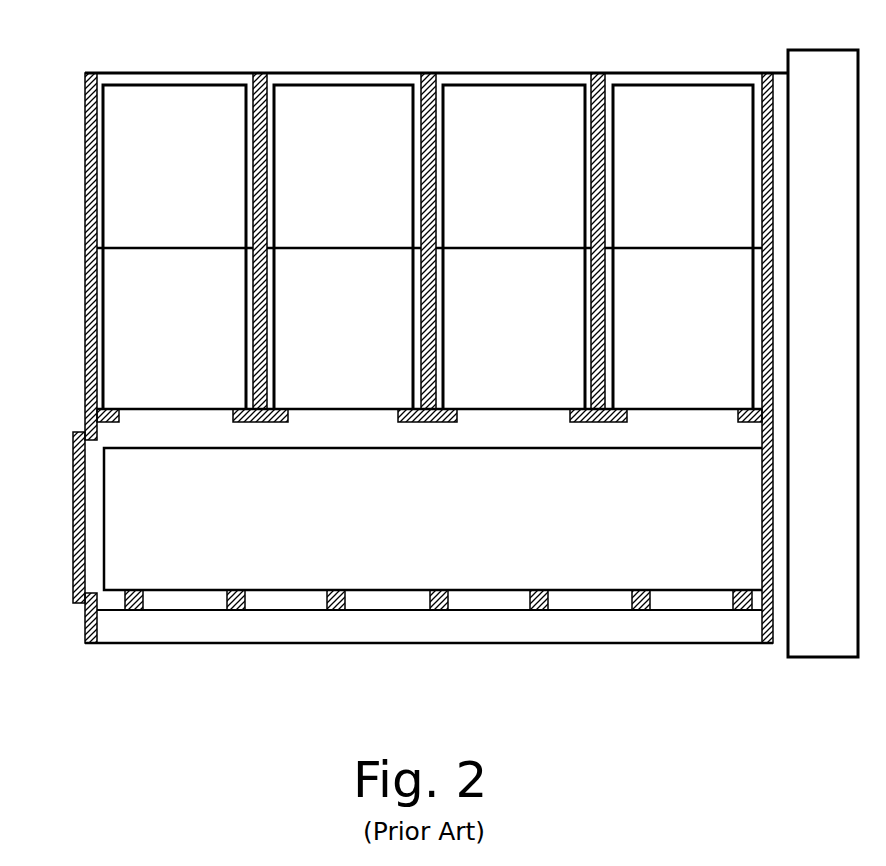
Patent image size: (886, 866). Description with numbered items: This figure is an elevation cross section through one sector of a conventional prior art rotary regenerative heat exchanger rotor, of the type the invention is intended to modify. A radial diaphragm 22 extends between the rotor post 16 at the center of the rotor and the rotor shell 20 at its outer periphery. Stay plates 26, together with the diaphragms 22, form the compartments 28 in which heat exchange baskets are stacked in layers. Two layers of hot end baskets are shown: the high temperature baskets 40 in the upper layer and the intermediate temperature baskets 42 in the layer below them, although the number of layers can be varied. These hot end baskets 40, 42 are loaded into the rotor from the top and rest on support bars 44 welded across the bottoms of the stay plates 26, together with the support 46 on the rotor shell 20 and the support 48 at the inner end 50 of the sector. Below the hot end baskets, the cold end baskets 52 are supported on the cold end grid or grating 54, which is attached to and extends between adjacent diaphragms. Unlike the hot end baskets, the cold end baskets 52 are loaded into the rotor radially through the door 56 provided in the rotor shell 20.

The rotor post 16 is at (805, 648).
The rotor shell 20 is at (93, 73).
The radial diaphragm 22 is at (670, 78).
The stay plate 26 is at (262, 73).
The compartment 28 is at (350, 82).
The high temperature basket 40 is at (517, 100).
The intermediate temperature basket 42 is at (125, 330).
The support bar 44 is at (428, 422).
The support 46 is at (110, 422).
The support 48 is at (745, 422).
The inner end 50 is at (767, 73).
The cold end basket 52 is at (125, 545).
The cold end grid 54 is at (235, 612).
The door 56 is at (78, 468).